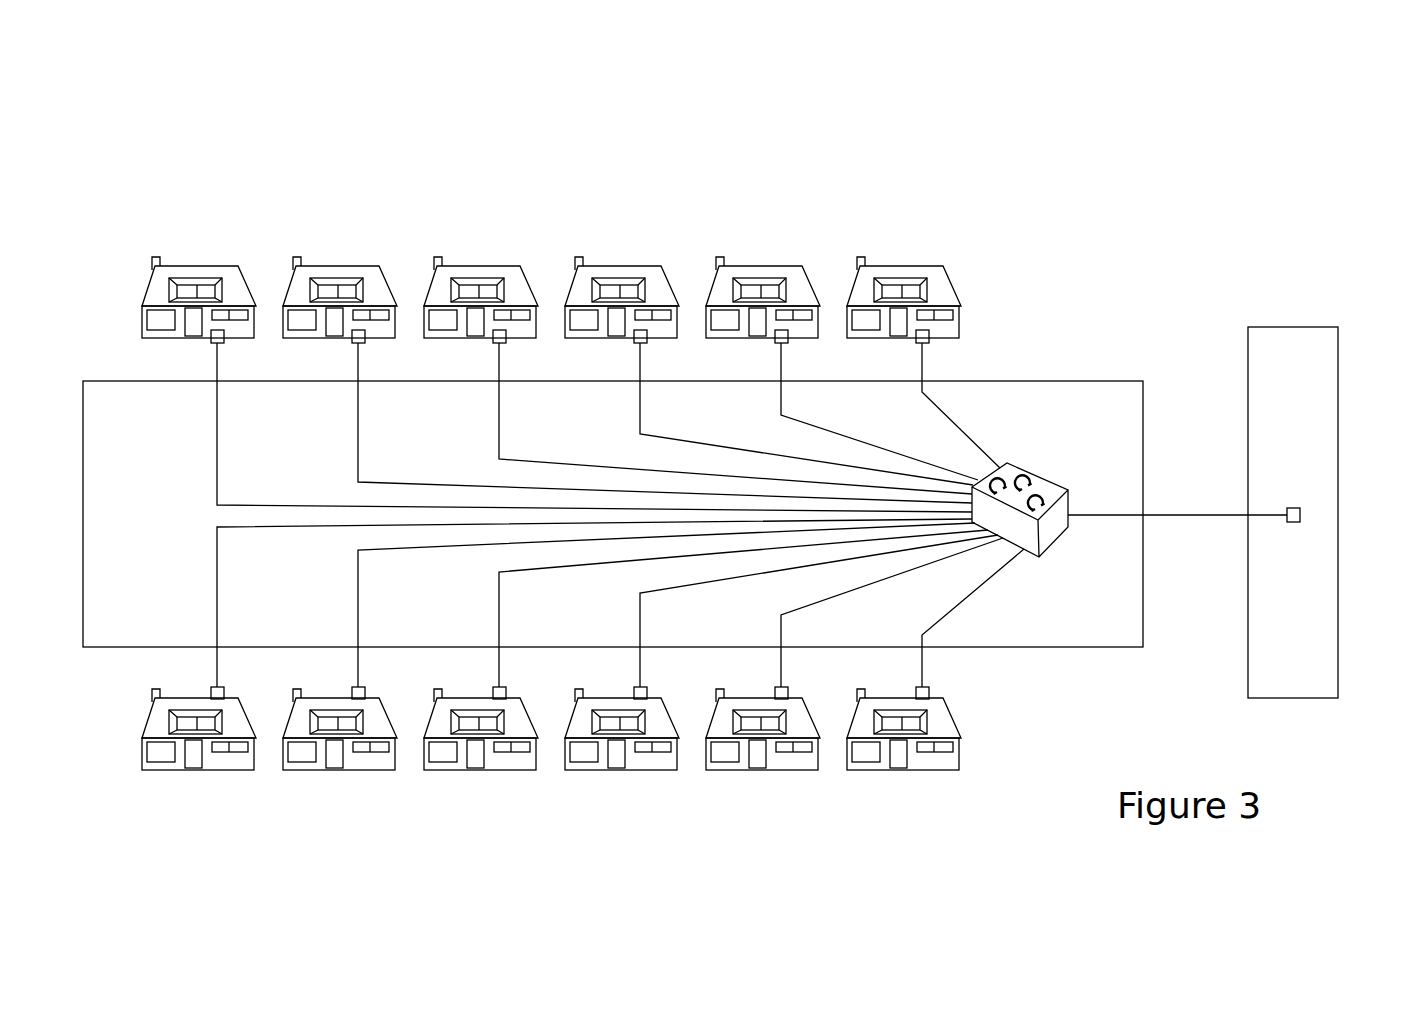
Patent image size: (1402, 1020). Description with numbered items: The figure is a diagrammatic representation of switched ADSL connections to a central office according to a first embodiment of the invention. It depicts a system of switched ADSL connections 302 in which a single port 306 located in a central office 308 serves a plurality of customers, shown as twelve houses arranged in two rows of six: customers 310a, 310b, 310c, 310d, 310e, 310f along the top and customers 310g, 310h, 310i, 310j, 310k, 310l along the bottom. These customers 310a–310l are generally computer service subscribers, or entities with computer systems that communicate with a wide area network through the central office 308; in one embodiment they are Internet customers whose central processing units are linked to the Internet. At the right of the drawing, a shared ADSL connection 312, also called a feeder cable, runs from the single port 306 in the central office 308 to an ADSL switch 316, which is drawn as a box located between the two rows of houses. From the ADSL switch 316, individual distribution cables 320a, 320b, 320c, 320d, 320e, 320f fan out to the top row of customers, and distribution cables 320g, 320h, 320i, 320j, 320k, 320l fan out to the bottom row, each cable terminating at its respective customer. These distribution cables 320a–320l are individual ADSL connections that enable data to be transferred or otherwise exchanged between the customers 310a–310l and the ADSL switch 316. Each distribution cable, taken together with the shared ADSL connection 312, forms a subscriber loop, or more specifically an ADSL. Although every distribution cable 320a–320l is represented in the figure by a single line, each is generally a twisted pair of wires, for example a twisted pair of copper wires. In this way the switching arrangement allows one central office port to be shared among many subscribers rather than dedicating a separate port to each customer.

The system of switched ADSL connections 302 is at (238, 148).
The single port 306 is at (1300, 515).
The central office 308 is at (1358, 300).
The customer 310a is at (197, 266).
The customer 310b is at (338, 266).
The customer 310c is at (479, 266).
The customer 310d is at (620, 266).
The customer 310e is at (761, 266).
The customer 310f is at (902, 266).
The customer 310g is at (899, 770).
The customer 310h is at (758, 770).
The customer 310i is at (617, 770).
The customer 310j is at (476, 770).
The customer 310k is at (335, 770).
The customer 310l is at (194, 770).
The shared ADSL connection 312 is at (1190, 513).
The ADSL switch 316 is at (1050, 480).
The distribution cable 320a is at (217, 367).
The distribution cable 320b is at (358, 367).
The distribution cable 320c is at (499, 367).
The distribution cable 320d is at (640, 367).
The distribution cable 320e is at (781, 367).
The distribution cable 320f is at (922, 367).
The distribution cable 320g is at (922, 663).
The distribution cable 320h is at (781, 663).
The distribution cable 320i is at (640, 663).
The distribution cable 320j is at (499, 663).
The distribution cable 320k is at (358, 663).
The distribution cable 320l is at (217, 663).